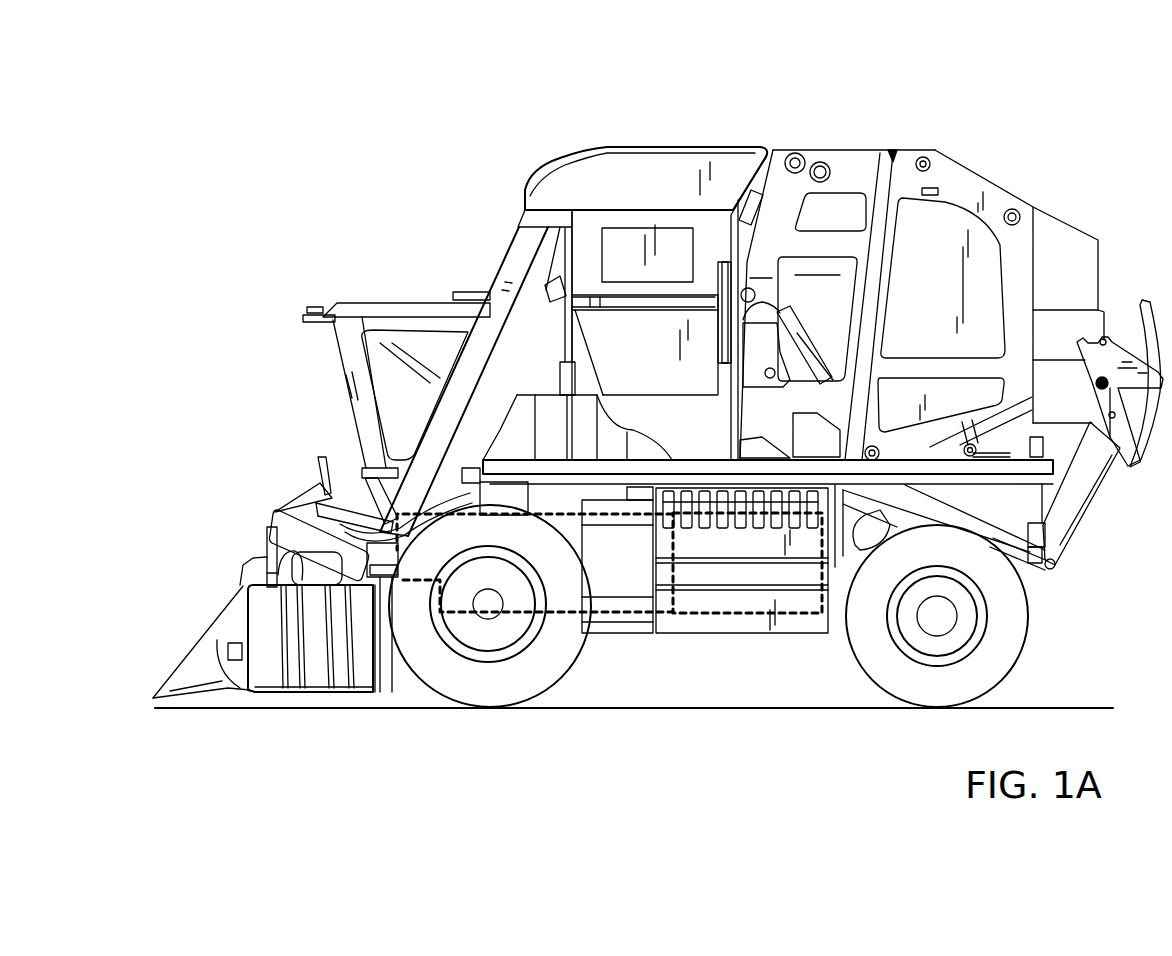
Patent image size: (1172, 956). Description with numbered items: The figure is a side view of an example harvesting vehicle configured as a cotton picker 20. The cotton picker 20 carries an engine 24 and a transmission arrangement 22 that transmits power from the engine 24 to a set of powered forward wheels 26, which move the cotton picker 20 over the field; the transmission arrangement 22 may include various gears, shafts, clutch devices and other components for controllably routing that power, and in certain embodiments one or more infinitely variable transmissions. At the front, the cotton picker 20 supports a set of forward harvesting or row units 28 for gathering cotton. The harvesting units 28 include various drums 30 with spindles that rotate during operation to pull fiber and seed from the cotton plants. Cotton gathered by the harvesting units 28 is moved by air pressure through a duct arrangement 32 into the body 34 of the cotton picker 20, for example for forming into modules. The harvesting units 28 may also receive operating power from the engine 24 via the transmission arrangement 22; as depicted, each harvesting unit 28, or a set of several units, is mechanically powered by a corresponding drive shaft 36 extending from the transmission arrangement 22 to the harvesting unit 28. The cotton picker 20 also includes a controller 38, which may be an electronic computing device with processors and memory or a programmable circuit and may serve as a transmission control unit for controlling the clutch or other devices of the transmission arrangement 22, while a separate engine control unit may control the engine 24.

The cotton picker 20 is at (263, 157).
The transmission arrangement 22 is at (642, 612).
The engine 24 is at (740, 615).
The powered forward wheels 26 is at (495, 693).
The harvesting units 28 is at (242, 552).
The drums 30 is at (343, 697).
The duct arrangement 32 is at (500, 256).
The body 34 is at (636, 128).
The drive shaft 36 is at (393, 695).
The controller 38 is at (472, 493).